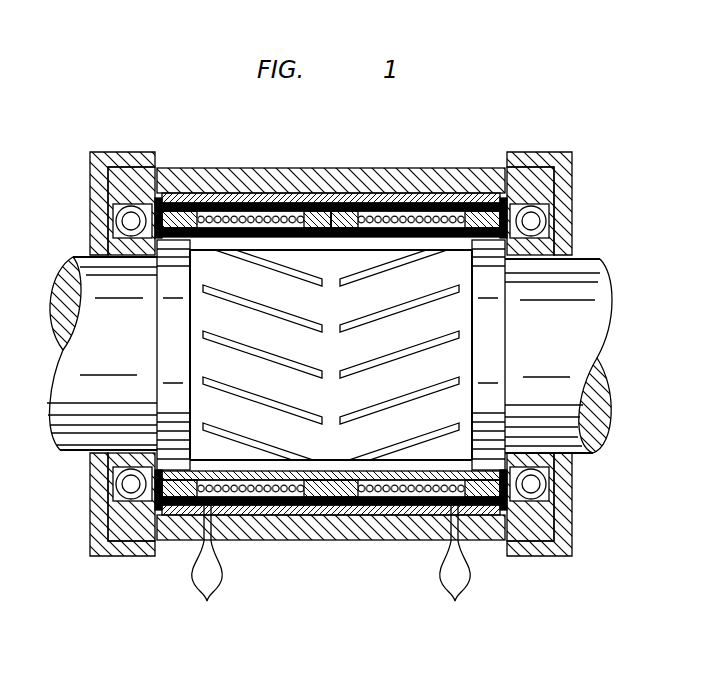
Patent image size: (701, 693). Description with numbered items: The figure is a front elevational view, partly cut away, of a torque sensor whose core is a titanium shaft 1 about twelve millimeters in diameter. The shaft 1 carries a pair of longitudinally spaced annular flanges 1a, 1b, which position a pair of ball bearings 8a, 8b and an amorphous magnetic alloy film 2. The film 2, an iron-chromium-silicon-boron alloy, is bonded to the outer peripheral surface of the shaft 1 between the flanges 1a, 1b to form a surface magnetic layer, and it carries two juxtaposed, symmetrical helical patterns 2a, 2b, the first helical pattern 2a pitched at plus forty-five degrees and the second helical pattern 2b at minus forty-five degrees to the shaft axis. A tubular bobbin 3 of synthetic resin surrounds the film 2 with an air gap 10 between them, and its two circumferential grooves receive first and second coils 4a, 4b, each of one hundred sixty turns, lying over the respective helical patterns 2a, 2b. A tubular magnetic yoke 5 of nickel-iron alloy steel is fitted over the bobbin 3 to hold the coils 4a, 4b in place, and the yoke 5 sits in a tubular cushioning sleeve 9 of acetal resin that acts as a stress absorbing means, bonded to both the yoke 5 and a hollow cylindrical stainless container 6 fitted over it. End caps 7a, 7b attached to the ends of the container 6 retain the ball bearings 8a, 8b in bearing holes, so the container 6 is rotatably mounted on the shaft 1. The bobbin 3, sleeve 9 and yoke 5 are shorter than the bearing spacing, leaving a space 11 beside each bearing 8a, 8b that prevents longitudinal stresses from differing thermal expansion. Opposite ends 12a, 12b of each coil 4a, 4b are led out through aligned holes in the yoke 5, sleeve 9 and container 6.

The shaft 1 is at (352, 355).
The annular flange 1a is at (141, 355).
The annular flange 1b is at (520, 355).
The amorphous magnetic alloy film 2 is at (331, 294).
The first helical pattern 2a is at (207, 287).
The second helical pattern 2b is at (452, 289).
The tubular bobbin 3 is at (331, 538).
The first coil 4a is at (246, 166).
The second coil 4b is at (415, 167).
The tubular magnetic yoke 5 is at (331, 166).
The hollow cylindrical container 6 is at (331, 558).
The end cap 7a is at (120, 382).
The end cap 7b is at (541, 382).
The ball bearing 8a is at (95, 354).
The ball bearing 8b is at (566, 354).
The tubular cushioning sleeve 9 is at (331, 541).
The air gap 10 is at (331, 168).
The space 11 is at (331, 300).
The coil end 12a is at (199, 565).
The coil end 12b is at (464, 565).